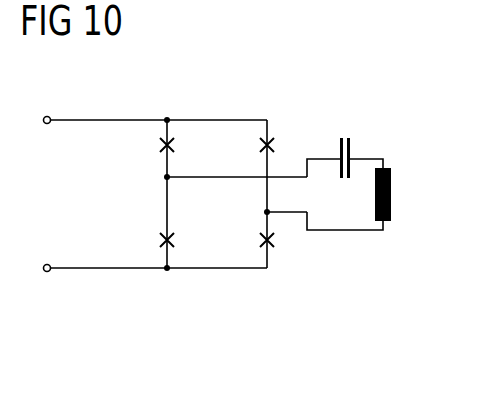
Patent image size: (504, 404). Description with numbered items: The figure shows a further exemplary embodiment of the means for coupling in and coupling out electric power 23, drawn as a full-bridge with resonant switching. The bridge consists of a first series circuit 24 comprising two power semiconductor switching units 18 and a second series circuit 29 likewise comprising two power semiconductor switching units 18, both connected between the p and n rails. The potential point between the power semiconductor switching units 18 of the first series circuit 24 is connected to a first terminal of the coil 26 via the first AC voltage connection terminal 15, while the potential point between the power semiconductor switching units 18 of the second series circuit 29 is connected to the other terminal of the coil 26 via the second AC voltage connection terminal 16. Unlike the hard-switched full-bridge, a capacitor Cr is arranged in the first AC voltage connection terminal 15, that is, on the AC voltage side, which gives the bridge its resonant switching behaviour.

The first AC voltage connection terminal 15 is at (366, 159).
The second AC voltage connection terminal 16 is at (345, 232).
The power semiconductor switching unit 18 is at (161, 148).
The means for coupling in and coupling out electric power 23 is at (382, 169).
The first series circuit 24 is at (119, 243).
The coil 26 is at (392, 193).
The second series circuit 29 is at (234, 145).